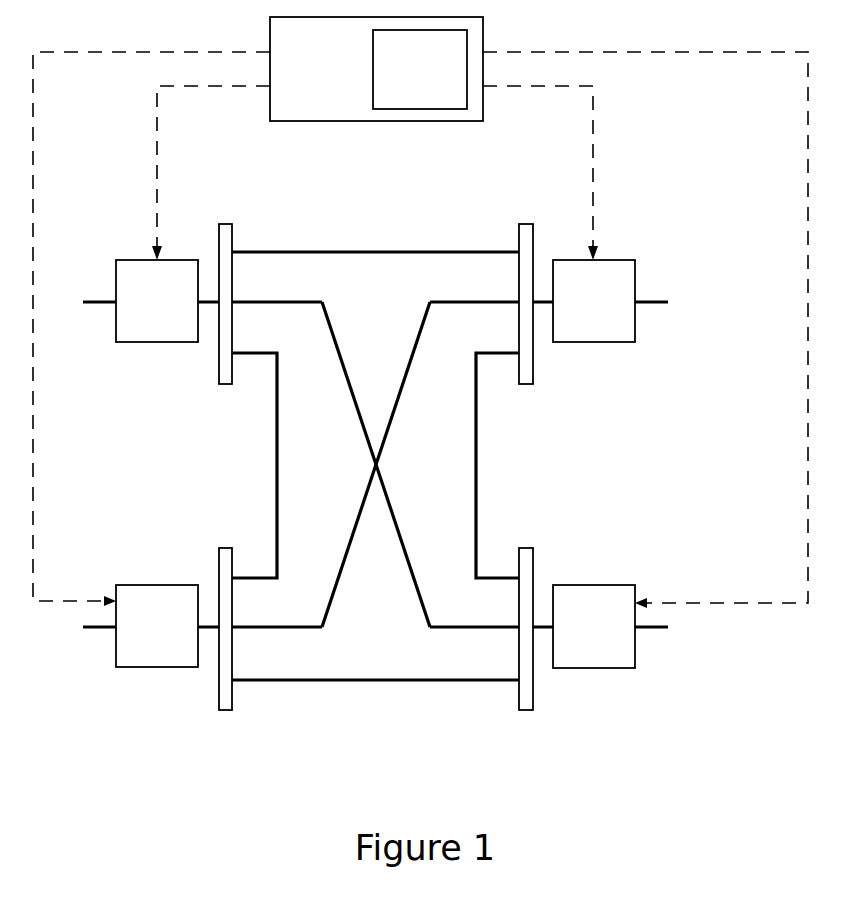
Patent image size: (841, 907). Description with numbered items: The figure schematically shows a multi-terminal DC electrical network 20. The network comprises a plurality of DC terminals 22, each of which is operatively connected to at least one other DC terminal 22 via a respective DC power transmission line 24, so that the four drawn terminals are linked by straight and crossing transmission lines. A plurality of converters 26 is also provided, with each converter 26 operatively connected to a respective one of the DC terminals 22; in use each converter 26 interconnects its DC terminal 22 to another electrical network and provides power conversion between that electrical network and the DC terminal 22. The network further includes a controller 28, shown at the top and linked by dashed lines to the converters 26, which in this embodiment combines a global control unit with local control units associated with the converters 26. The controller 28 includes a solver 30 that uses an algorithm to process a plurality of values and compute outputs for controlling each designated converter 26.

The multi-terminal DC electrical network 20 is at (548, 435).
The DC terminal 22 is at (375, 468).
The DC power transmission line 24 is at (375, 466).
The converter 26 is at (612, 645).
The controller 28 is at (306, 84).
The solver 30 is at (400, 84).